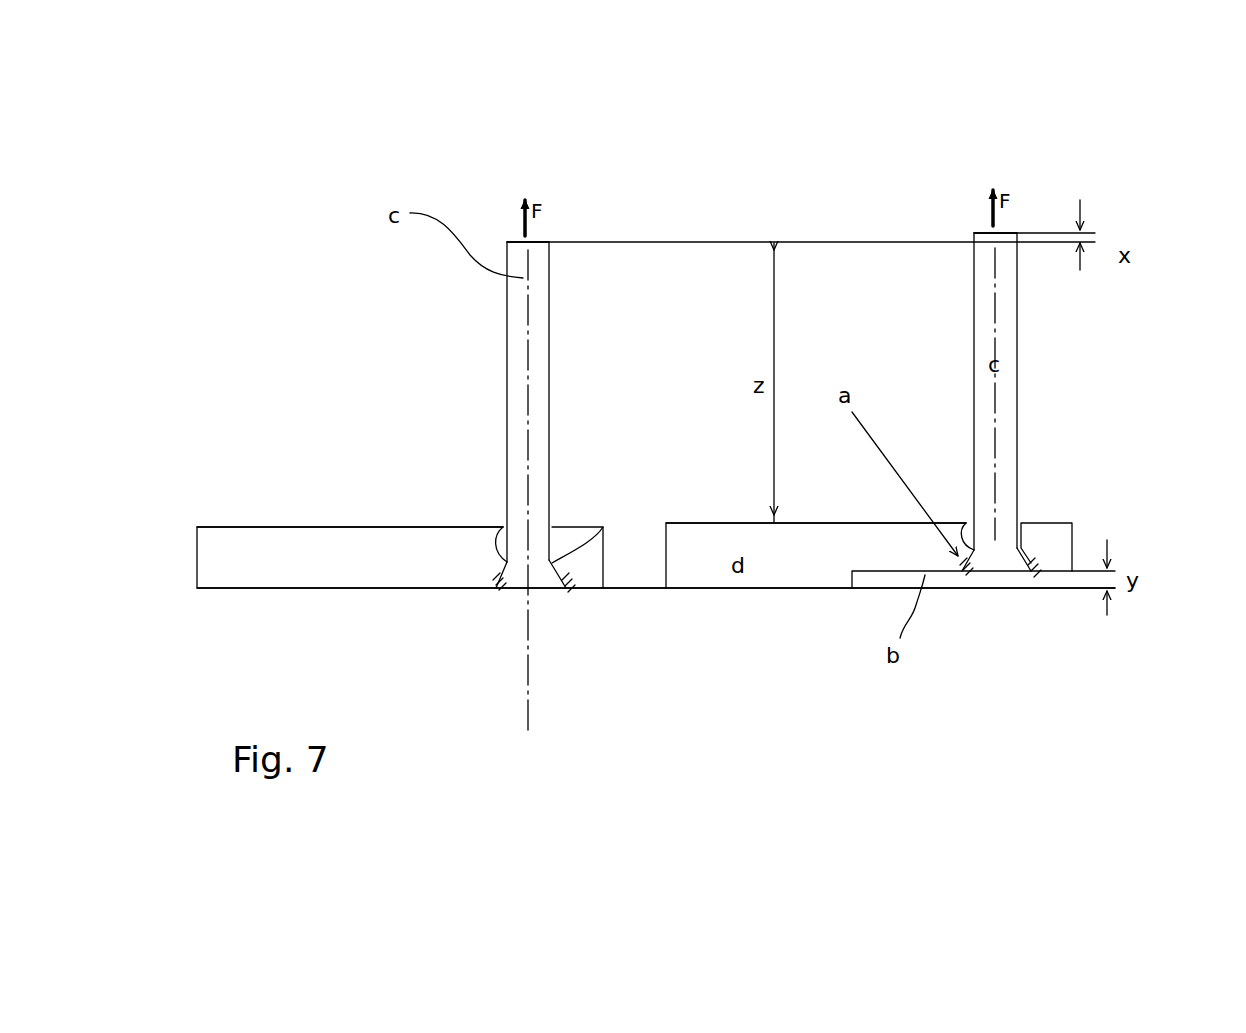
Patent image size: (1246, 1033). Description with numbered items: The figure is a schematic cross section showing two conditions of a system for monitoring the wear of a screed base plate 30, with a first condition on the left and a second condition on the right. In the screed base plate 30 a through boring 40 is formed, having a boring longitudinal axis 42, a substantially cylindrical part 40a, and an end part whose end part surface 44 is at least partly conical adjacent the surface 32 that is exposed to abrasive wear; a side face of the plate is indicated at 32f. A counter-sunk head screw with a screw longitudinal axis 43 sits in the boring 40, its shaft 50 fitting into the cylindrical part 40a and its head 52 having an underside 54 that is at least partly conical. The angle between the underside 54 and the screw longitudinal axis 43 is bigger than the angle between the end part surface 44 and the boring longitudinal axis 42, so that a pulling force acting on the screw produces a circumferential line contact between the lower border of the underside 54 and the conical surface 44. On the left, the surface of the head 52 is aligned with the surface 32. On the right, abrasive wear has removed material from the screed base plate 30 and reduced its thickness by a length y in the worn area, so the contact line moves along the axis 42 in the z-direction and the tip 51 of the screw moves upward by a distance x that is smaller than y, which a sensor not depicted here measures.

The screed base plate 30 is at (228, 590).
The surface 32 is at (305, 596).
The side face of plate 32f is at (353, 472).
The through boring 40 is at (570, 596).
The cylindrical part 40a is at (505, 531).
The boring longitudinal axis 42 is at (528, 722).
The screw longitudinal axis 43 is at (1000, 323).
The end part surface 44 is at (500, 590).
The shaft 50 is at (530, 362).
The tip 51 is at (512, 232).
The head 52 is at (548, 582).
The underside 54 is at (560, 565).